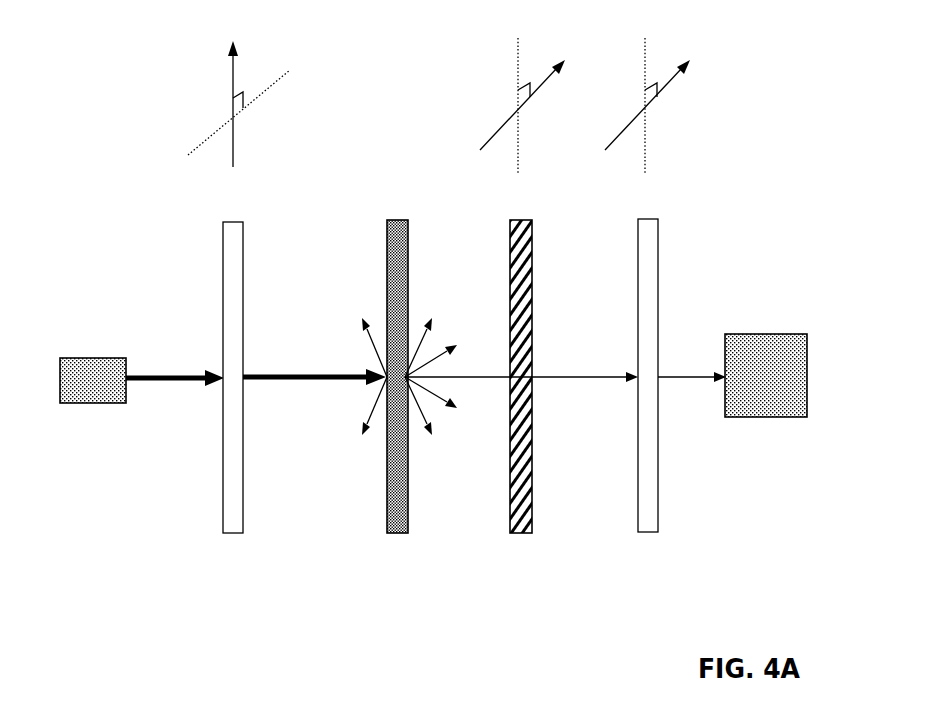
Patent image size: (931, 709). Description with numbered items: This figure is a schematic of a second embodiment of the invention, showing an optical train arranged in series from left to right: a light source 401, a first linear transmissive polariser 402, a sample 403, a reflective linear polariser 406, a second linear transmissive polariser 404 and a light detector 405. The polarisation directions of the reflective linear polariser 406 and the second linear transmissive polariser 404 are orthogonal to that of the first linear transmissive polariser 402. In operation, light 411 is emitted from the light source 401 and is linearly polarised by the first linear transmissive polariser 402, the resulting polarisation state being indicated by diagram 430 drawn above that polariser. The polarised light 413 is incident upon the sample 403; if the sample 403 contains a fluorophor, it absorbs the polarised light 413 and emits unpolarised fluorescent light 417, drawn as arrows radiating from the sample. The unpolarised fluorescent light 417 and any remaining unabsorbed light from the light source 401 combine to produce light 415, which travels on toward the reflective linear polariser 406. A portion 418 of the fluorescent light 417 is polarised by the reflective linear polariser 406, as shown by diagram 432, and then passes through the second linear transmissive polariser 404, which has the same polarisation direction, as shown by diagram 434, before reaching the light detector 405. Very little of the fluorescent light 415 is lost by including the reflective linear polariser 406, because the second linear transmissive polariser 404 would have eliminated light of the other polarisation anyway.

The light source 401 is at (96, 384).
The first linear transmissive polariser 402 is at (235, 533).
The sample 403 is at (397, 533).
The second linear transmissive polariser 404 is at (648, 532).
The light detector 405 is at (772, 408).
The reflective linear polariser 406 is at (523, 533).
The light 411 is at (175, 369).
The polarised light 413 is at (314, 368).
The light 415 is at (483, 377).
The unpolarised fluorescent light 417 is at (421, 374).
The portion of fluorescent light 418 is at (629, 366).
The diagram 430 is at (239, 90).
The diagram 432 is at (522, 93).
The diagram 434 is at (647, 93).